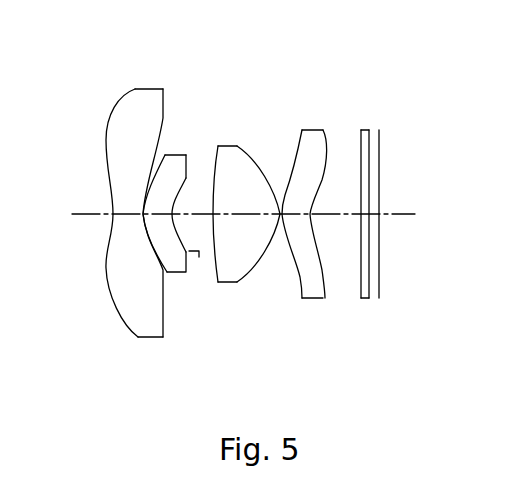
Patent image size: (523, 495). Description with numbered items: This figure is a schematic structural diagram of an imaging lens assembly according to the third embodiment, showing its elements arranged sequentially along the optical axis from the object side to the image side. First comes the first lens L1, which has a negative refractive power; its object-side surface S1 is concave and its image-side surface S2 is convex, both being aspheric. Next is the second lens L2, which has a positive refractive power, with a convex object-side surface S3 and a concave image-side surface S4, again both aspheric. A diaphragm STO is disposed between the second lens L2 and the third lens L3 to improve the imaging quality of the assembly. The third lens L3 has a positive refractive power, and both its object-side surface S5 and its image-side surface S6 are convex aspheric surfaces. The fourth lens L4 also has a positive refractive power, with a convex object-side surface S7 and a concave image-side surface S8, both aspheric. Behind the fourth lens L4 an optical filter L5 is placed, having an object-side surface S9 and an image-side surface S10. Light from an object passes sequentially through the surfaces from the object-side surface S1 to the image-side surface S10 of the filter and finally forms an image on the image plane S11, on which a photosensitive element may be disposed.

The first lens L1 is at (106, 219).
The second lens L2 is at (165, 219).
The third lens L3 is at (246, 219).
The fourth lens L4 is at (328, 219).
The optical filter L5 is at (437, 219).
The diaphragm STO is at (191, 177).
The object-side surface of the first lens S1 is at (114, 214).
The image-side surface of the first lens S2 is at (143, 214).
The object-side surface of the second lens S3 is at (143, 214).
The image-side surface of the second lens S4 is at (172, 214).
The object-side surface of the third lens S5 is at (213, 214).
The image-side surface of the third lens S6 is at (280, 214).
The object-side surface of the fourth lens S7 is at (282, 214).
The image-side surface of the fourth lens S8 is at (310, 214).
The object-side surface of the optical filter S9 is at (361, 214).
The image-side surface of the optical filter S10 is at (369, 214).
The image plane S11 is at (380, 214).